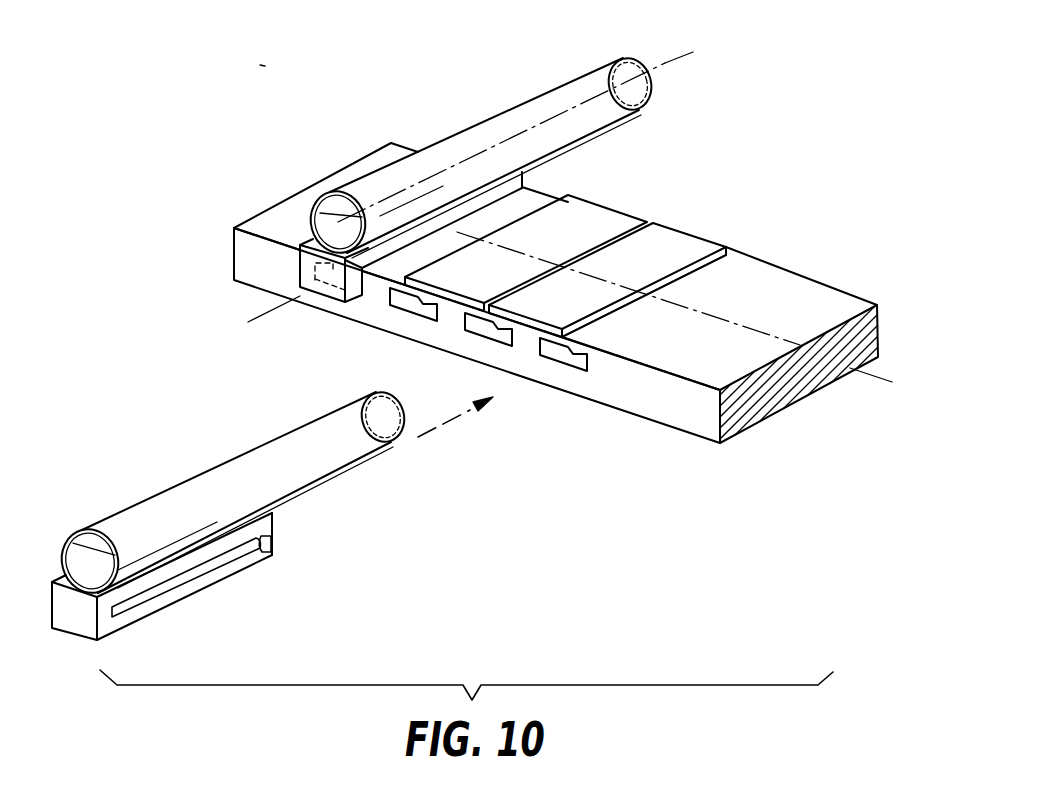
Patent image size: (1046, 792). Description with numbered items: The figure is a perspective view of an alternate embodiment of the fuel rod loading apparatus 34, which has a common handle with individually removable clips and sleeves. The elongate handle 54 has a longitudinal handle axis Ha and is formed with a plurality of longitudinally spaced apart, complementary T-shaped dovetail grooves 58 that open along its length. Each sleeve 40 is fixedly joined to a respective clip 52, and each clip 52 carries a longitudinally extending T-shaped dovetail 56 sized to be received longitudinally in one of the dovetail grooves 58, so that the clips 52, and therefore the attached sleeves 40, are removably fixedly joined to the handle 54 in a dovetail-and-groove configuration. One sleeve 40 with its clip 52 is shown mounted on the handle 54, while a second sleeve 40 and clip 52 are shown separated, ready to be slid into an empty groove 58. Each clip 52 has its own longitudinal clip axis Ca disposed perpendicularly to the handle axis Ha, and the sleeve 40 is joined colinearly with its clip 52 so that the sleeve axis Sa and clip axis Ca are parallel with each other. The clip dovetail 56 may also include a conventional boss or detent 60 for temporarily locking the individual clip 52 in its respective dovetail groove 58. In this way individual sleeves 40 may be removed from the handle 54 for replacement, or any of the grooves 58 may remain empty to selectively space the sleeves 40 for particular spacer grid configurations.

The loading apparatus 34 is at (810, 263).
The sleeve 40 is at (458, 133).
The clip 52 is at (300, 267).
The handle 54 is at (765, 255).
The T-shaped dovetail 56 is at (188, 588).
The T-shaped dovetail groove 58 is at (568, 206).
The boss or detent 60 is at (260, 546).
The sleeve axis Sa is at (515, 121).
The clip axis Ca is at (274, 322).
The handle axis Ha is at (877, 370).